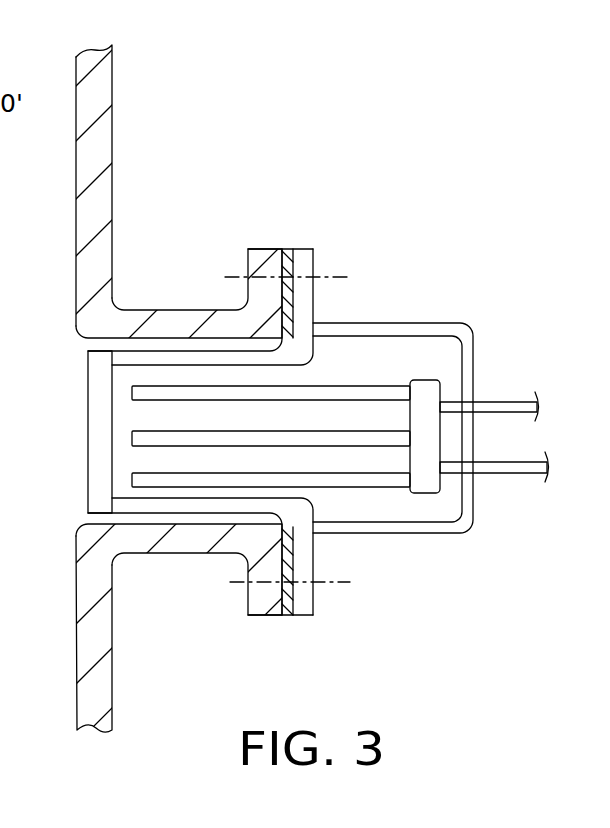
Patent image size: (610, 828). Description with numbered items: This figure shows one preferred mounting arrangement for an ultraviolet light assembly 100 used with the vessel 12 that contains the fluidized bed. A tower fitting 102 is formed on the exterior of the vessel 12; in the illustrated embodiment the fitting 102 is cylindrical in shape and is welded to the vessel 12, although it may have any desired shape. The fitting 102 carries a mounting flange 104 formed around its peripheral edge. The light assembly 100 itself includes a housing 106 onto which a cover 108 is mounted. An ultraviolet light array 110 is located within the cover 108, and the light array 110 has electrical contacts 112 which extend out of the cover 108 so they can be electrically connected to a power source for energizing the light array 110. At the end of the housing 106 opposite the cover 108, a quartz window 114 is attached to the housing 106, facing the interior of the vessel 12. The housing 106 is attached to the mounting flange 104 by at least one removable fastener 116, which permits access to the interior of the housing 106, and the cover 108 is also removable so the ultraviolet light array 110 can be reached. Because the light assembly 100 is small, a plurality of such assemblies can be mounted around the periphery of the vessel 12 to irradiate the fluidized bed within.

The vessel 12 is at (113, 98).
The ultraviolet light assembly 100 is at (522, 165).
The tower fitting 102 is at (147, 309).
The mounting flange 104 is at (265, 607).
The housing 106 is at (308, 600).
The cover 108 is at (470, 515).
The ultraviolet light array 110 is at (366, 363).
The electrical contacts 112 is at (507, 398).
The quartz window 114 is at (100, 440).
The removable fastener 116 is at (317, 264).